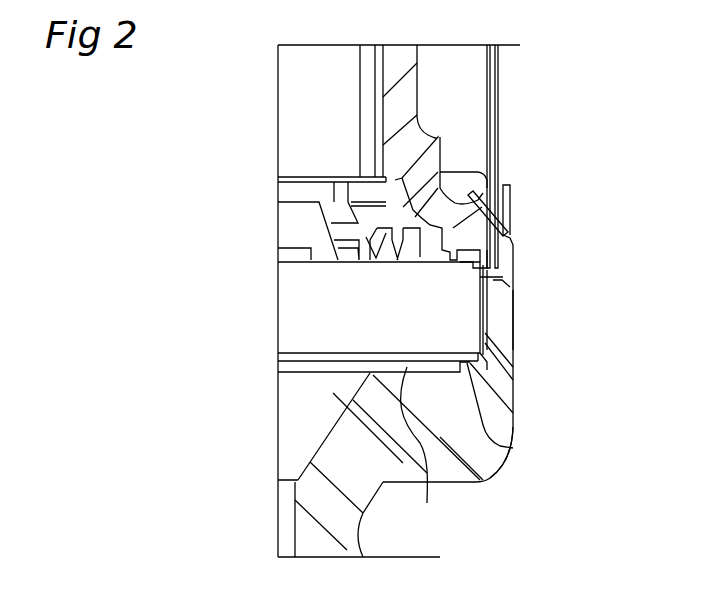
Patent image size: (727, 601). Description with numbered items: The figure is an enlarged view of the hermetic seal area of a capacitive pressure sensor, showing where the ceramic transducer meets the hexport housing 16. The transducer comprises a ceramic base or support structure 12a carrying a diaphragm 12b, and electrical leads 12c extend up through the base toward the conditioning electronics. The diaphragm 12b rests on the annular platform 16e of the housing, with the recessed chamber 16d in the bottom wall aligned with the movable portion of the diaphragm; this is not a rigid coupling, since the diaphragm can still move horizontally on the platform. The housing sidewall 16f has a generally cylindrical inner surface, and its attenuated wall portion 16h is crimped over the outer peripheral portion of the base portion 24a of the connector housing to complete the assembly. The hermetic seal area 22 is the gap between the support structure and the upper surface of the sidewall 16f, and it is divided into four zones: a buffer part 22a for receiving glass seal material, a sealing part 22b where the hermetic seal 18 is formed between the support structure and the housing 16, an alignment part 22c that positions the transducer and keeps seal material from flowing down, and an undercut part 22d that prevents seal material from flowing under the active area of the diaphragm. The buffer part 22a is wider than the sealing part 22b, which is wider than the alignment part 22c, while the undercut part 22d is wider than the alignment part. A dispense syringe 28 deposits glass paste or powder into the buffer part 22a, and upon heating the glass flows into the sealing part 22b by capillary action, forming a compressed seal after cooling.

The ceramic base or support structure 12a is at (280, 312).
The diaphragm 12b is at (280, 357).
The electrical leads 12c is at (403, 233).
The hexport housing 16 is at (514, 425).
The recessed chamber 16d is at (313, 432).
The annular platform 16e is at (508, 444).
The sidewall 16f is at (502, 323).
The attenuated wall portion 16h is at (508, 210).
The hermetic seal 18 is at (490, 286).
The hermetic seal area 22 is at (462, 317).
The buffer part 22a is at (512, 282).
The sealing part 22b is at (487, 302).
The alignment part 22c is at (503, 336).
The undercut part 22d is at (503, 358).
The base portion of connector housing 24a is at (413, 150).
The dispense syringe 28 is at (490, 163).